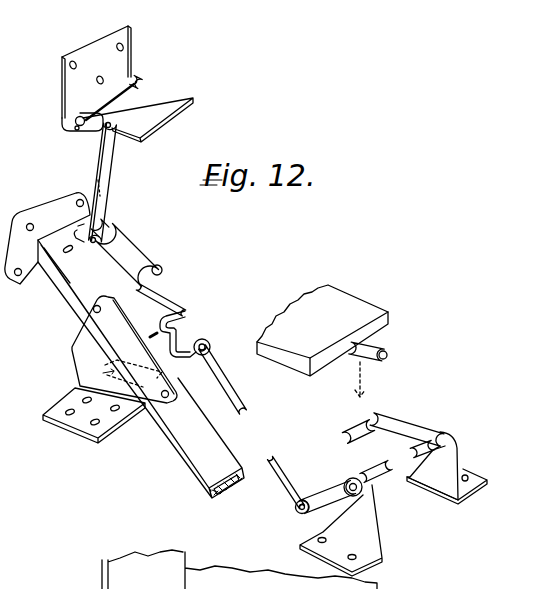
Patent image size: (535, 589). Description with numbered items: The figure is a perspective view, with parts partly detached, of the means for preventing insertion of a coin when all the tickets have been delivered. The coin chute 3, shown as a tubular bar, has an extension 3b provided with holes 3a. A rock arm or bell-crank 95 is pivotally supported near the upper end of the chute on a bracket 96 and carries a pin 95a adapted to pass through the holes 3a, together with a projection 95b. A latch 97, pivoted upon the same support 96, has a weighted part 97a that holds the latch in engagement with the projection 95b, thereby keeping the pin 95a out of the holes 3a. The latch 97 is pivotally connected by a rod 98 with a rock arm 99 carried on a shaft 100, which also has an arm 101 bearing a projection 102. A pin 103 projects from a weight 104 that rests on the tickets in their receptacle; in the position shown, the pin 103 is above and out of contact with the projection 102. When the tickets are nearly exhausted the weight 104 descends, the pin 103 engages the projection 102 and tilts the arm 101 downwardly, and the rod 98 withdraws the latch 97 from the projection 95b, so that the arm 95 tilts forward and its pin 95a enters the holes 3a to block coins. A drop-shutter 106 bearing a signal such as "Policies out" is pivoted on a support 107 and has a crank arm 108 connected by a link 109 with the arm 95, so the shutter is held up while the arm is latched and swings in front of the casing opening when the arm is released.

The chute 3 is at (217, 451).
The holes 3a is at (73, 252).
The extension 3b is at (78, 287).
The rock arm 95 is at (130, 258).
The pin 95a is at (47, 238).
The projection 95b is at (155, 335).
The bracket 96 is at (75, 387).
The latch 97 is at (176, 328).
The weighted part 97a is at (118, 371).
The rod 98 is at (226, 380).
The rock arm 99 is at (330, 487).
The shaft 100 is at (387, 473).
The arm 101 is at (413, 433).
The projection 102 is at (352, 427).
The pin 103 is at (388, 350).
The weight 104 is at (347, 307).
The drop-shutter 106 is at (127, 84).
The support 107 is at (140, 80).
The crank arm 108 is at (92, 132).
The link 109 is at (102, 173).